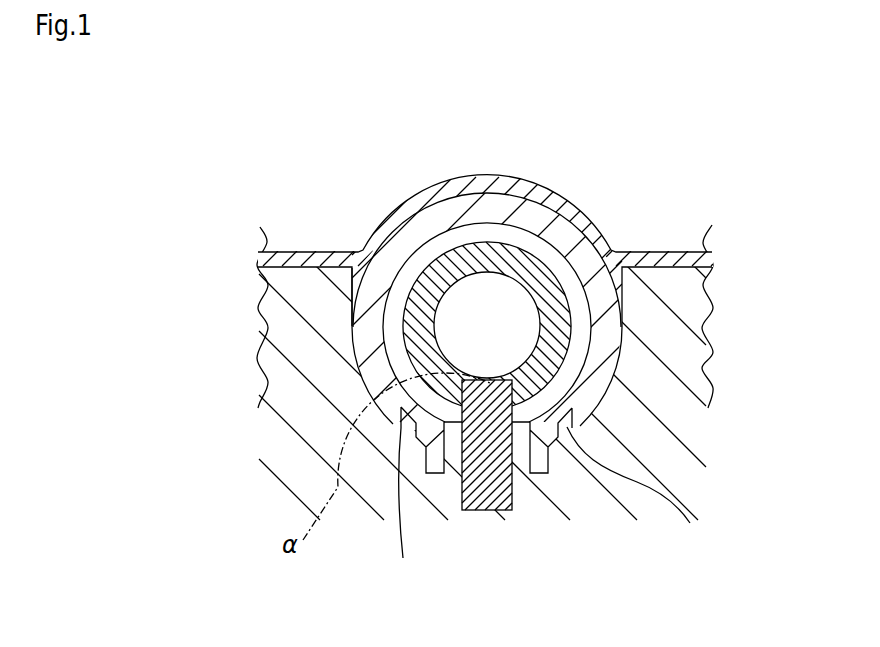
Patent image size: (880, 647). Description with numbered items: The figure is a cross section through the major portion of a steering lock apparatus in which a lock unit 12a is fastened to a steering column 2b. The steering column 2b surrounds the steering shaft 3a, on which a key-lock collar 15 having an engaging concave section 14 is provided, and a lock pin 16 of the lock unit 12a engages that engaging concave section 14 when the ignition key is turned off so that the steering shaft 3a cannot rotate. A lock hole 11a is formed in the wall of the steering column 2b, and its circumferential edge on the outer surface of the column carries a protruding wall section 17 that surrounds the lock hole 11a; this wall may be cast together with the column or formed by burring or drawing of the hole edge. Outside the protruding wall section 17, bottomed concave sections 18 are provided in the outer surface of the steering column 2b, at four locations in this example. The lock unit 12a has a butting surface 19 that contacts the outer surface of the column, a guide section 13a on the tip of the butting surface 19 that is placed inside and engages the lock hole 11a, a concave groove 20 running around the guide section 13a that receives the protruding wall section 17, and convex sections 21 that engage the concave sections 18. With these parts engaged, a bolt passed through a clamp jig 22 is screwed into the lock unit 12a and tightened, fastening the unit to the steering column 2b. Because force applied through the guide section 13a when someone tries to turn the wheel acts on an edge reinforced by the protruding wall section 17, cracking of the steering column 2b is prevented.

The steering column 2b is at (578, 235).
The steering shaft 3a is at (498, 330).
The lock hole 11a is at (522, 423).
The lock unit 12a is at (300, 423).
The guide section 13a is at (417, 346).
The engaging concave section 14 is at (470, 377).
The key-lock collar 15 is at (560, 326).
The lock pin 16 is at (483, 470).
The protruding wall section 17 is at (540, 463).
The concave sections 18 is at (409, 430).
The butting surface 19 is at (353, 331).
The concave groove 20 is at (437, 467).
The convex sections 21 is at (546, 508).
The clamp jig 22 is at (295, 251).